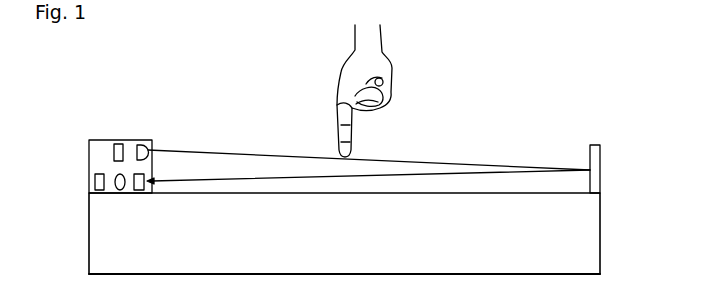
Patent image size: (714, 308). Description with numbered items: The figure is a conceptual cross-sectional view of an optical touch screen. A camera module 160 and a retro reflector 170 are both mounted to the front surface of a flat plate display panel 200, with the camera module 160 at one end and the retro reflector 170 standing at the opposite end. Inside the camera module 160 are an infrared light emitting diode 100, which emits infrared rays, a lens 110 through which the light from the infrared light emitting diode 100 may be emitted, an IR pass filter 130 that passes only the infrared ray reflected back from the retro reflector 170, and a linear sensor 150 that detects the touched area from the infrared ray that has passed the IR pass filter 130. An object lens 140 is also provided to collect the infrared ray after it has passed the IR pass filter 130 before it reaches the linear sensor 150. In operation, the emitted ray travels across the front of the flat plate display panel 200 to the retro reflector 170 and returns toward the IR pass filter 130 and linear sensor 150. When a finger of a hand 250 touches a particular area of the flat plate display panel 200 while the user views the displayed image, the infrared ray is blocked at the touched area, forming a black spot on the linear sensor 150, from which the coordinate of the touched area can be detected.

The infrared light emitting diode 100 is at (120, 144).
The lens 110 is at (143, 141).
The IR pass filter 130 is at (139, 191).
The object lens 140 is at (118, 190).
The linear sensor 150 is at (95, 182).
The camera module 160 is at (89, 144).
The retro reflector 170 is at (592, 146).
The flat plate display panel 200 is at (373, 262).
The hand 250 is at (392, 68).